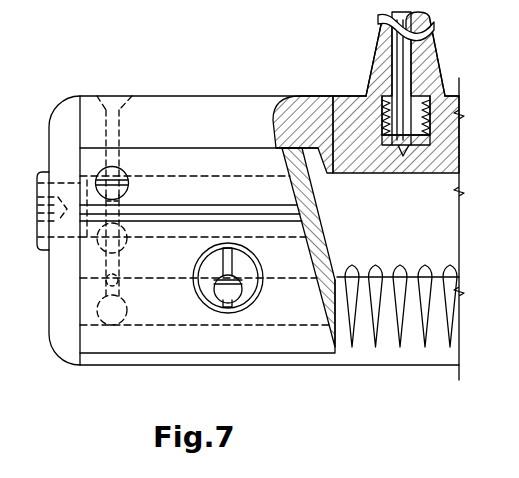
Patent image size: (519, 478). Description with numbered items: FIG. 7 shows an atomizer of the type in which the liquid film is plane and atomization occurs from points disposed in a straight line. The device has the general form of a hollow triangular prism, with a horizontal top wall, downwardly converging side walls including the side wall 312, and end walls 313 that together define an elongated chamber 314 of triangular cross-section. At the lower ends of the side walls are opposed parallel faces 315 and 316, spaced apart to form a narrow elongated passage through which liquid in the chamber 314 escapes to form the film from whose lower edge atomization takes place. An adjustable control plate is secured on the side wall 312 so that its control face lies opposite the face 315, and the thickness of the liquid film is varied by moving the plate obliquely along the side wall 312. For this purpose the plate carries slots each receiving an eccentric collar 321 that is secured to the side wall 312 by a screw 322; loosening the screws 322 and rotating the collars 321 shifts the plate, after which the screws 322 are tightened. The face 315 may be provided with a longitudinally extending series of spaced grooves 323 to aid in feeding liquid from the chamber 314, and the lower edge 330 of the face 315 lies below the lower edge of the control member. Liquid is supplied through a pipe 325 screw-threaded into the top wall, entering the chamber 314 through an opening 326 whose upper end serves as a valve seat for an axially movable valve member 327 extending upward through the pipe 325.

The side wall 312 is at (182, 162).
The end wall 313 is at (52, 292).
The chamber 314 is at (393, 228).
The face 315 is at (392, 342).
The face 316 is at (342, 313).
The eccentric collar 321 is at (213, 263).
The screw 322 is at (230, 292).
The groove 323 is at (353, 278).
The pipe 325 is at (371, 85).
The opening 326 is at (403, 168).
The valve member 327 is at (403, 50).
The lower edge 330 is at (140, 366).